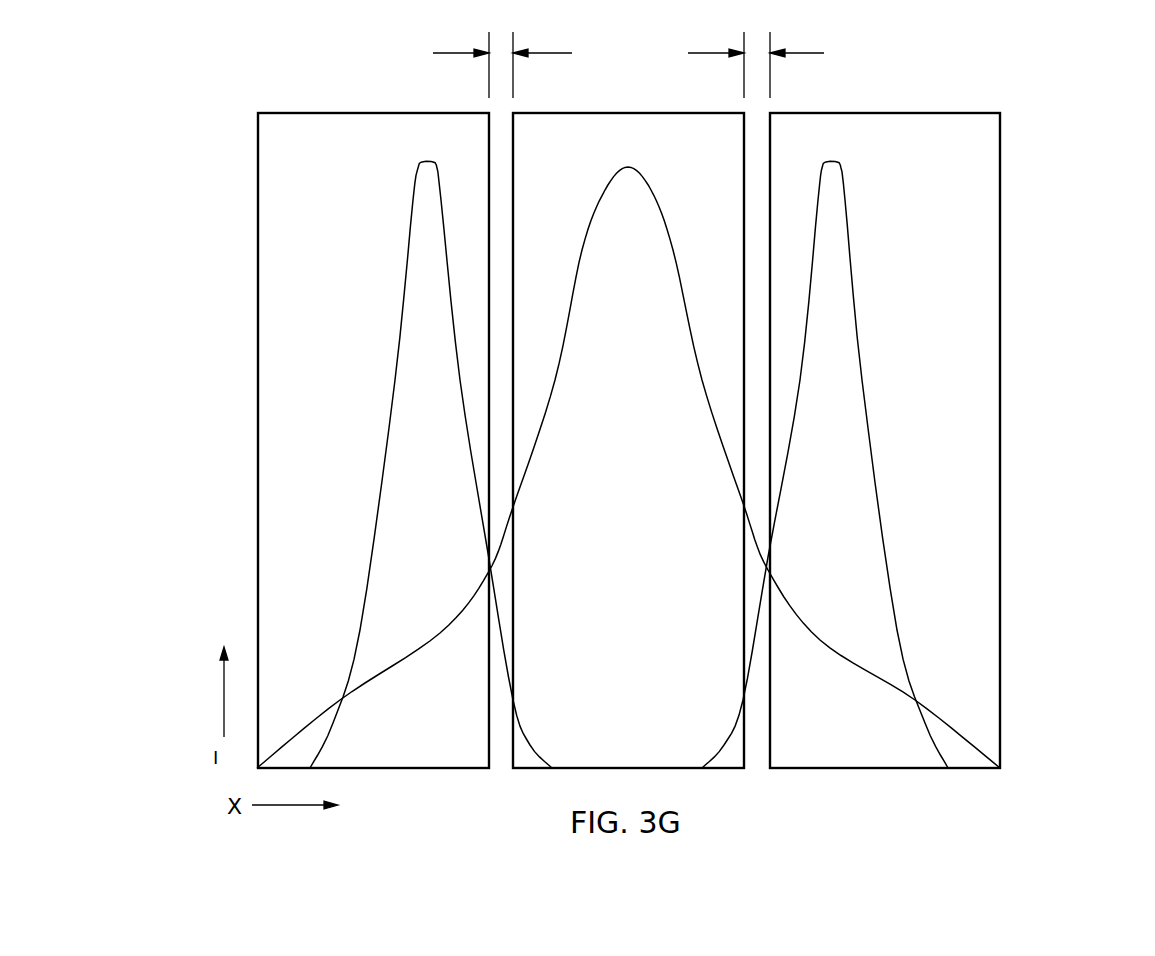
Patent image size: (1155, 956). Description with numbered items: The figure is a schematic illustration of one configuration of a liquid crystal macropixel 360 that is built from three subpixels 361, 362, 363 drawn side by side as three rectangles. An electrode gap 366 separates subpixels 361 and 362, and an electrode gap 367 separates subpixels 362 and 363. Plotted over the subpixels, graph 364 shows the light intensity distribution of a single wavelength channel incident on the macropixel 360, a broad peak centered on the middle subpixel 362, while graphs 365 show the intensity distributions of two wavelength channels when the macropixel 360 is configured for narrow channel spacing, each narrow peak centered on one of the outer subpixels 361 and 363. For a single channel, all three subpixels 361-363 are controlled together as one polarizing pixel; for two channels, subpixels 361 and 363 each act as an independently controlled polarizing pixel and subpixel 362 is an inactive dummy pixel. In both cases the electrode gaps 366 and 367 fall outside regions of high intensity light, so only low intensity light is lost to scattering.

The macropixel 360 is at (1045, 139).
The subpixel 361 is at (258, 255).
The subpixel 362 is at (580, 113).
The subpixel 363 is at (1000, 321).
The graph 364 is at (663, 207).
The graphs 365 is at (400, 334).
The electrode gap 366 is at (455, 53).
The electrode gap 367 is at (807, 53).